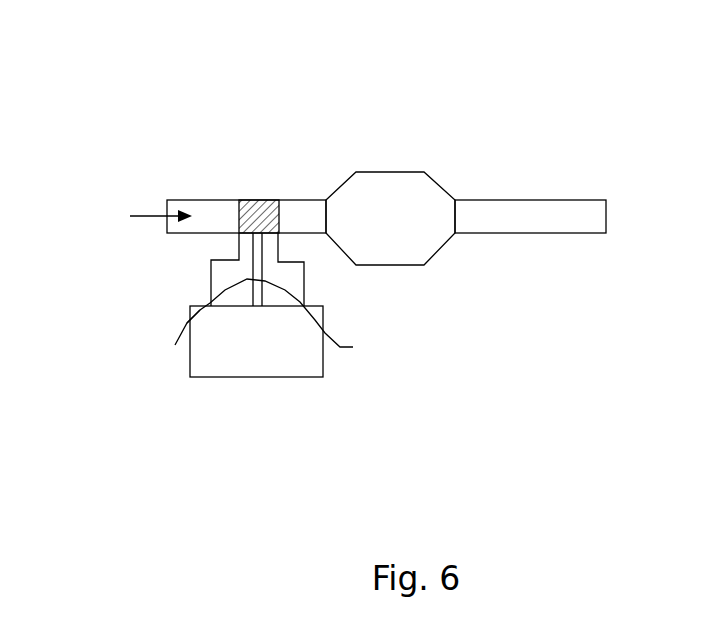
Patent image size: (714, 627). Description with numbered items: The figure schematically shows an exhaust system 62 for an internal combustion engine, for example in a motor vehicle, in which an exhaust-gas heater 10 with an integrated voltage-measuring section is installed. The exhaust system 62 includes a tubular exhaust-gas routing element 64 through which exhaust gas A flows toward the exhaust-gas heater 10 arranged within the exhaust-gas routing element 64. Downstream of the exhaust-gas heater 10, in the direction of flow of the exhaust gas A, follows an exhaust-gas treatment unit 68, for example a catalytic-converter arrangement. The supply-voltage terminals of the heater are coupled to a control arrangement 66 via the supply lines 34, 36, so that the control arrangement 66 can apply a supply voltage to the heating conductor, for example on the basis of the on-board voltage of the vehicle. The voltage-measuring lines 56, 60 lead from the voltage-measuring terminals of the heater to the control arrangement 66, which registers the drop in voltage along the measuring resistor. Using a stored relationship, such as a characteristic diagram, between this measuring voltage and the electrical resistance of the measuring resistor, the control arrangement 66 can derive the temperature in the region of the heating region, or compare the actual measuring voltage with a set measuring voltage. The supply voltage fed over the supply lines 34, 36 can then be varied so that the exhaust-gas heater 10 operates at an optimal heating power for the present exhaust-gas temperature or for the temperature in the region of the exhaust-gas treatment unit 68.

The exhaust system 62 is at (502, 128).
The exhaust-gas routing element 64 is at (192, 200).
The exhaust-gas heater 10 is at (260, 200).
The exhaust-gas treatment unit 68 is at (387, 172).
The exhaust gas A is at (135, 216).
The supply line 34 is at (212, 272).
The supply line 36 is at (305, 281).
The voltage-measuring line 56 is at (175, 345).
The voltage-measuring line 60 is at (300, 326).
The control arrangement 66 is at (262, 378).